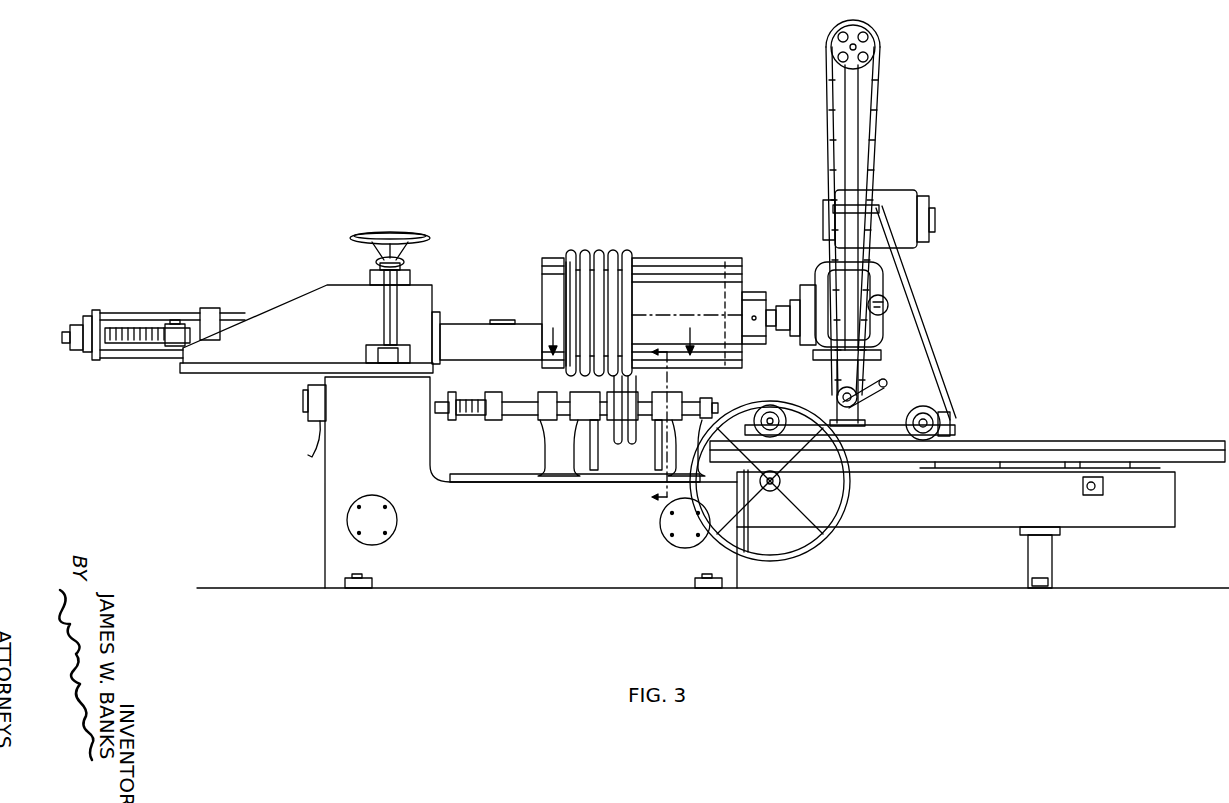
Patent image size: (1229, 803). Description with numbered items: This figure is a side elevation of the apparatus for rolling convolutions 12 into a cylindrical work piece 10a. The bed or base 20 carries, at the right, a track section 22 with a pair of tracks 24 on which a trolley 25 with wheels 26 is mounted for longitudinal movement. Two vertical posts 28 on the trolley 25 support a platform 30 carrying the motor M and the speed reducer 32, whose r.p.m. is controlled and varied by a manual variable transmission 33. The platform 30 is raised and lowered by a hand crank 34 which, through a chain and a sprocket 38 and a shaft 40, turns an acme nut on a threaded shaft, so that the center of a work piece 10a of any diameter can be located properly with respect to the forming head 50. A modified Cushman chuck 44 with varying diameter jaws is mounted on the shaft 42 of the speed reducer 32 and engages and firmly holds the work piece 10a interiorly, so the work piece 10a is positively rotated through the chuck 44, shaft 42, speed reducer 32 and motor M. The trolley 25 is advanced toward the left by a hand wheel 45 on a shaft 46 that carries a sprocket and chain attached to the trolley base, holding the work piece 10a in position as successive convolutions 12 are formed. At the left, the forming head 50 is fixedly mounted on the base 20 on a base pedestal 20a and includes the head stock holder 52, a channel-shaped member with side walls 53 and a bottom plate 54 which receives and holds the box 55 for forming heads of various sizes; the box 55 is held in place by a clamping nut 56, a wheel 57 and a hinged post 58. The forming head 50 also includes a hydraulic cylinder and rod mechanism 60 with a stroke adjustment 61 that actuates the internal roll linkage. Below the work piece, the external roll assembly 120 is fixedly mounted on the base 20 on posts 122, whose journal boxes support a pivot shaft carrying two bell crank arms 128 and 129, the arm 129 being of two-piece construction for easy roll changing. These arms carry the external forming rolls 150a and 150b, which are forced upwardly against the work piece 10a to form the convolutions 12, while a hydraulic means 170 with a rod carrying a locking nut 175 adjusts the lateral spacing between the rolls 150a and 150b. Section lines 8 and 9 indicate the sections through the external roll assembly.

The bed or base 20 is at (491, 576).
The base pedestal 20a is at (338, 468).
The track section 22 is at (1002, 514).
The tracks 24 is at (1210, 442).
The trolley 25 is at (952, 432).
The wheels 26 is at (914, 415).
The vertical posts 28 is at (854, 125).
The platform 30 is at (882, 356).
The speed reducer 32 is at (880, 320).
The manual variable transmission 33 is at (886, 300).
The hand crank 34 is at (872, 392).
The sprocket 38 is at (870, 48).
The shaft 40 is at (838, 48).
The shaft 42 is at (785, 312).
The modified Cushman chuck 44 is at (756, 293).
The hand wheel 45 is at (846, 490).
The shaft 46 is at (781, 481).
The forming head 50 is at (487, 326).
The head stock holder 52 is at (315, 300).
The side walls 53 is at (261, 356).
The bottom plate 54 is at (221, 374).
The box 55 is at (437, 313).
The clamping nut 56 is at (415, 276).
The wheel 57 is at (393, 238).
The hinged post 58 is at (380, 309).
The hydraulic cylinder and rod mechanism 60 is at (210, 316).
The stroke adjustment 61 is at (176, 346).
The section line 8- 8 is at (650, 425).
The section line 9- 9 is at (618, 330).
The work piece 10a is at (702, 276).
The convolutions 12 is at (630, 256).
The motor M is at (892, 206).
The external roll assembly 120 is at (540, 406).
The posts 122 is at (546, 441).
The bell crank arm 128 is at (593, 456).
The bell crank arm 129 is at (652, 458).
The external forming roll 150a is at (616, 440).
The external forming roll 150b is at (631, 442).
The hydraulic means 170 is at (460, 400).
The locking nut 175 is at (712, 408).